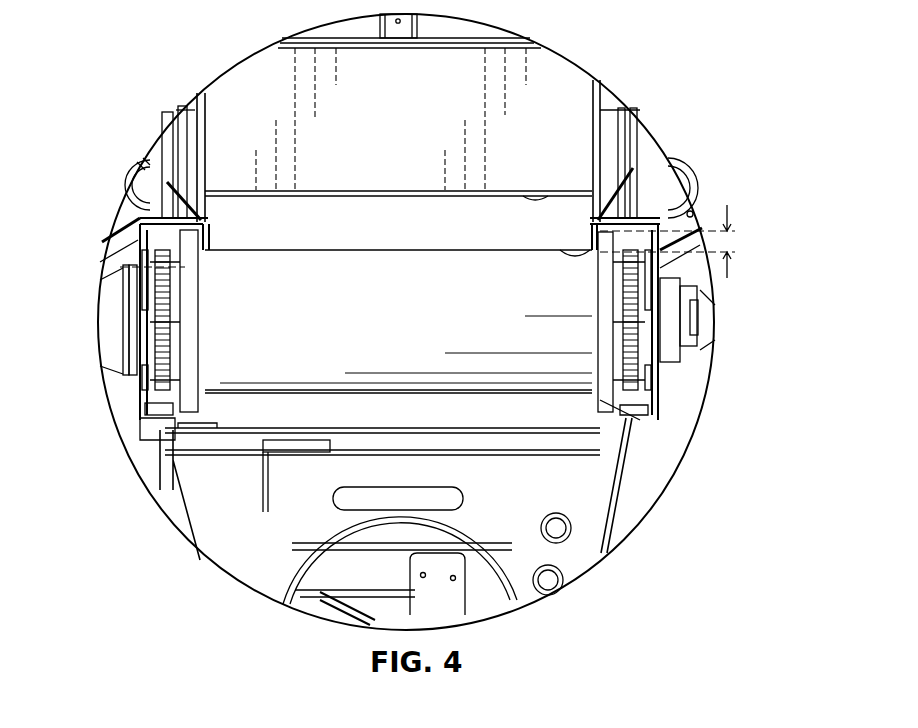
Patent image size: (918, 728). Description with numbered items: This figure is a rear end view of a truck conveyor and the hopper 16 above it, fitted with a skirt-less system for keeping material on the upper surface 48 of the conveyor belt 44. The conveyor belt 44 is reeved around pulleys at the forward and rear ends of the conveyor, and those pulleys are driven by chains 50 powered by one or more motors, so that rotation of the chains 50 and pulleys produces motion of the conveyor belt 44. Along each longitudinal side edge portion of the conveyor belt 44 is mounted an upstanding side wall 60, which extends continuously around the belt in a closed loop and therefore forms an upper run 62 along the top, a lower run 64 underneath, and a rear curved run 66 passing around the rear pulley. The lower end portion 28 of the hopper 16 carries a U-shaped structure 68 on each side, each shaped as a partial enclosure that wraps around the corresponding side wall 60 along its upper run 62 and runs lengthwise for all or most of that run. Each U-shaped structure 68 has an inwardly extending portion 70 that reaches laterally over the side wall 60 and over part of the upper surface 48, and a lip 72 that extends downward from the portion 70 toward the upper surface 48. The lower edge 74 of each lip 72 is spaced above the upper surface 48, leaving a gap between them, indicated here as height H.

The hopper 16 is at (527, 36).
The lower end portion 28 is at (627, 106).
The conveyor belt 44 is at (612, 398).
The upper surface 48 is at (372, 249).
The chains 50 is at (160, 325).
The side wall 60 is at (155, 282).
The upper run 62 is at (138, 215).
The lower run 64 is at (617, 428).
The rear curved run 66 is at (683, 285).
The U-shaped structure 68 is at (125, 232).
The inwardly extending portion 70 is at (192, 232).
The lip 72 is at (212, 240).
The lower edge 74 is at (575, 250).
The height H is at (730, 208).